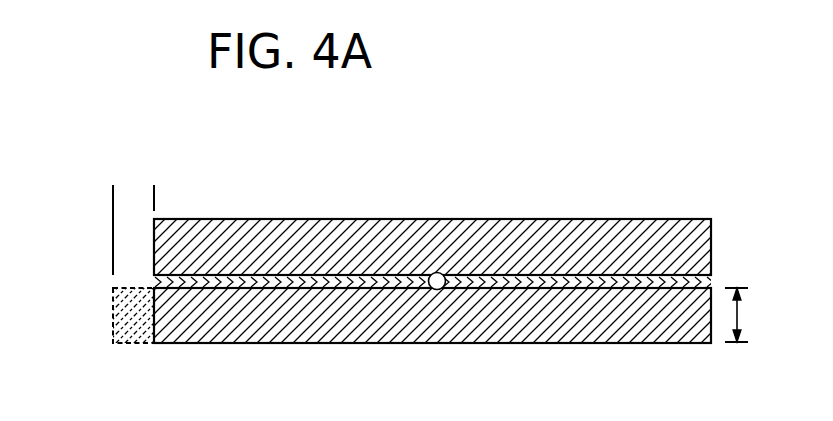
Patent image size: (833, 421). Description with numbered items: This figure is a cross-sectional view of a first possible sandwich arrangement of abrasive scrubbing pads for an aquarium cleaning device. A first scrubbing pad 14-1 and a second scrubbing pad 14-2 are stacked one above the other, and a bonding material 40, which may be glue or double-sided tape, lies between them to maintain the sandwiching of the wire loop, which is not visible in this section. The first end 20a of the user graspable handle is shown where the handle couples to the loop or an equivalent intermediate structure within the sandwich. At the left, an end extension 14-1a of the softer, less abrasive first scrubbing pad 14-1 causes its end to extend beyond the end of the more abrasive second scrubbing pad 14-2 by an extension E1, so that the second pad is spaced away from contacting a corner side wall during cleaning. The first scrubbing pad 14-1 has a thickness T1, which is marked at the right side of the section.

The second scrubbing pad 14-2 is at (305, 220).
The bonding material 40 is at (705, 282).
The first scrubbing pad 14-1 is at (313, 343).
The end extension 14-1a is at (142, 343).
The first end of handle 20a is at (437, 289).
The extension E1 is at (167, 200).
The thickness T1 is at (737, 315).